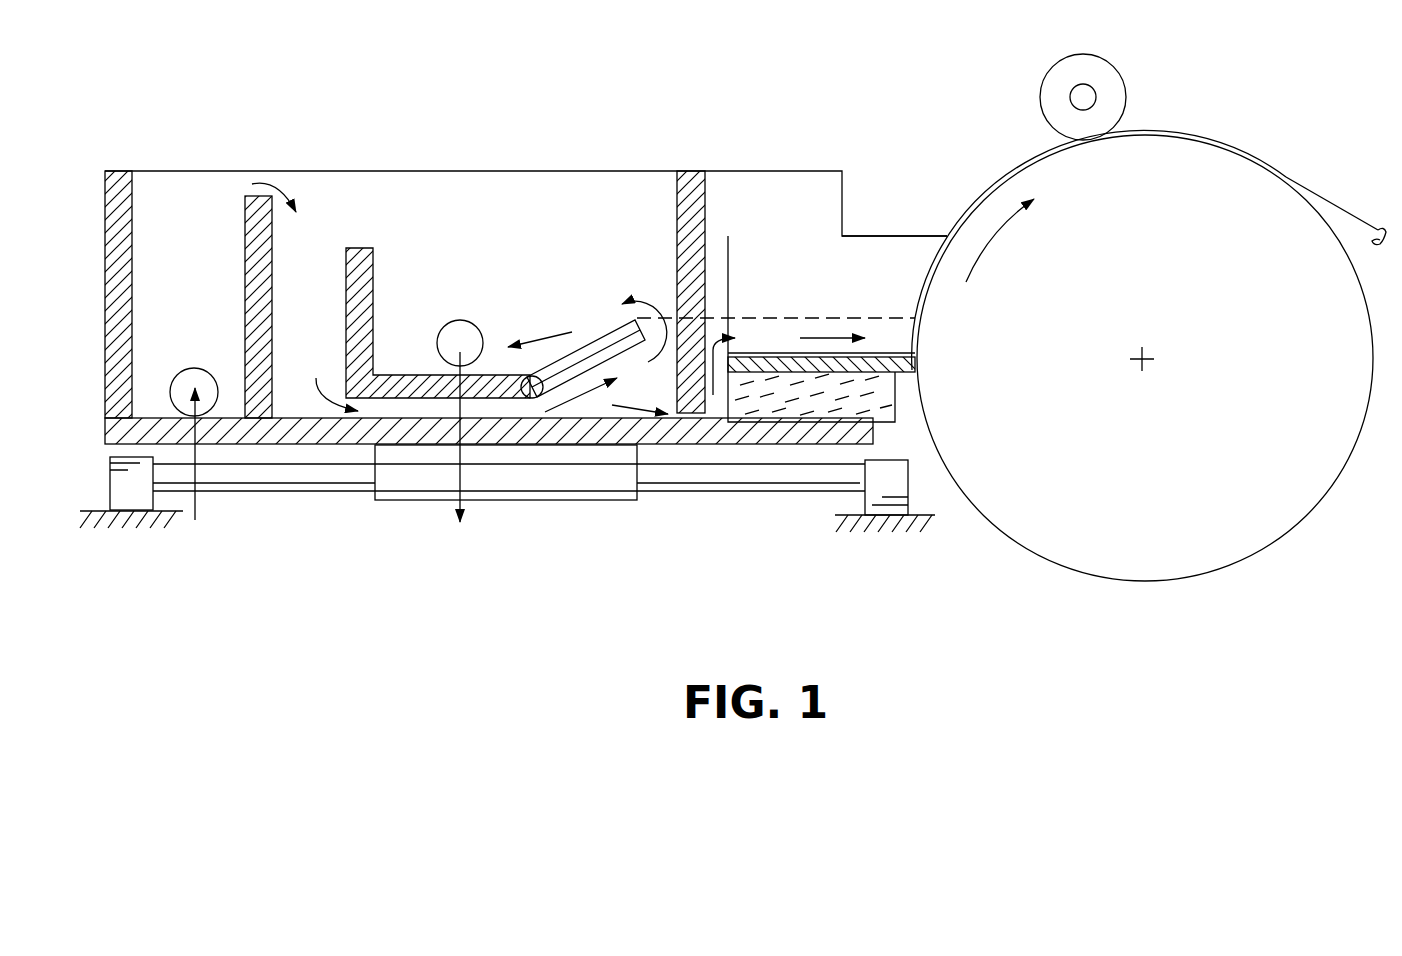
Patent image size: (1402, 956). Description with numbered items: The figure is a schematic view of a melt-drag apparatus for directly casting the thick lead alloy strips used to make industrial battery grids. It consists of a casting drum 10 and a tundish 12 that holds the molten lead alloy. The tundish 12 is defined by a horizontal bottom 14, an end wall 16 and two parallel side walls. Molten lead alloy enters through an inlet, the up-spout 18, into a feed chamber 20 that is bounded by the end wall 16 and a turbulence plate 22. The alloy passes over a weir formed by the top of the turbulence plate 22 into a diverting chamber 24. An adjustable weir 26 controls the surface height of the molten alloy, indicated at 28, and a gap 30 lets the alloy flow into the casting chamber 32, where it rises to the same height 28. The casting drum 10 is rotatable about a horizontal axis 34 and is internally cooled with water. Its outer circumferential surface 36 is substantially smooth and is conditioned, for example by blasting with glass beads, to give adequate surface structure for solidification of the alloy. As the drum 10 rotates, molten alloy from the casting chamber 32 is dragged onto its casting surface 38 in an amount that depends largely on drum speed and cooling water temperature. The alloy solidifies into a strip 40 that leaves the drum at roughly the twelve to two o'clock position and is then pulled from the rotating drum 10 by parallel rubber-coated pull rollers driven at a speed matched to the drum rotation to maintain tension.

The casting drum 10 is at (1040, 537).
The tundish 12 is at (593, 186).
The horizontal bottom 14 is at (425, 450).
The end wall 16 is at (105, 186).
The up-spout 18 is at (195, 505).
The feed chamber 20 is at (201, 250).
The turbulence plate 22 is at (245, 309).
The diverting chamber 24 is at (329, 309).
The adjustable weir 26 is at (613, 325).
The surface height 28 is at (665, 318).
The gap 30 is at (688, 424).
The casting chamber 32 is at (792, 350).
The horizontal axis 34 is at (1148, 362).
The outer circumferential surface 36 is at (993, 190).
The casting surface 38 is at (940, 262).
The strip 40 is at (1347, 210).